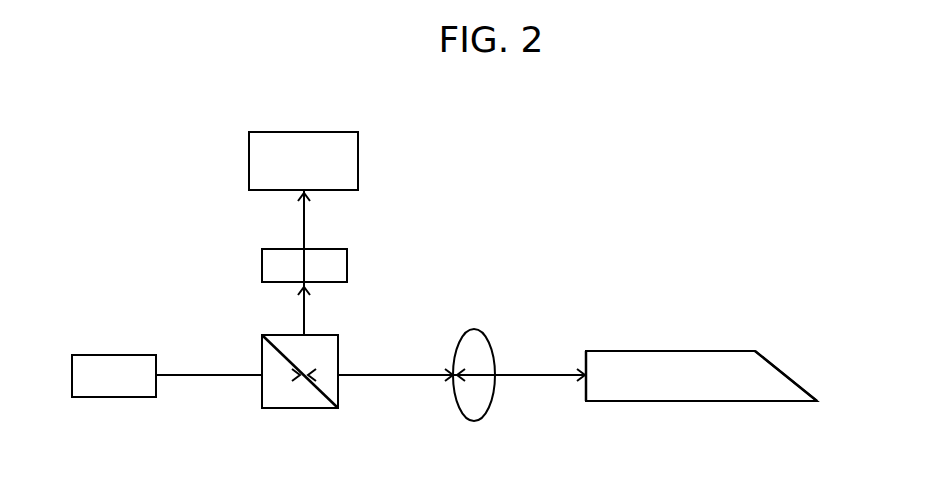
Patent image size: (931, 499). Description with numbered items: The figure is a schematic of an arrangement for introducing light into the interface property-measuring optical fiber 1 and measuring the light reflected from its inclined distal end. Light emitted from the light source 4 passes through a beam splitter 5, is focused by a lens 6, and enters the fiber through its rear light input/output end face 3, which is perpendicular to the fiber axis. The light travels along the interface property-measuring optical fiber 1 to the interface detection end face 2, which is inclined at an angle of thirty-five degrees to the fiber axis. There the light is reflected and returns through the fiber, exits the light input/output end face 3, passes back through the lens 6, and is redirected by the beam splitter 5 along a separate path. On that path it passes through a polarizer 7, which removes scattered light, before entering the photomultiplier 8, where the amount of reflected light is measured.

The interface property-measuring optical fiber 1 is at (684, 351).
The interface detection end face 2 is at (787, 378).
The light input/output end face 3 is at (585, 353).
The light source 4 is at (113, 355).
The beam splitter 5 is at (300, 410).
The lens 6 is at (470, 330).
The polarizer 7 is at (262, 268).
The photomultiplier 8 is at (249, 165).